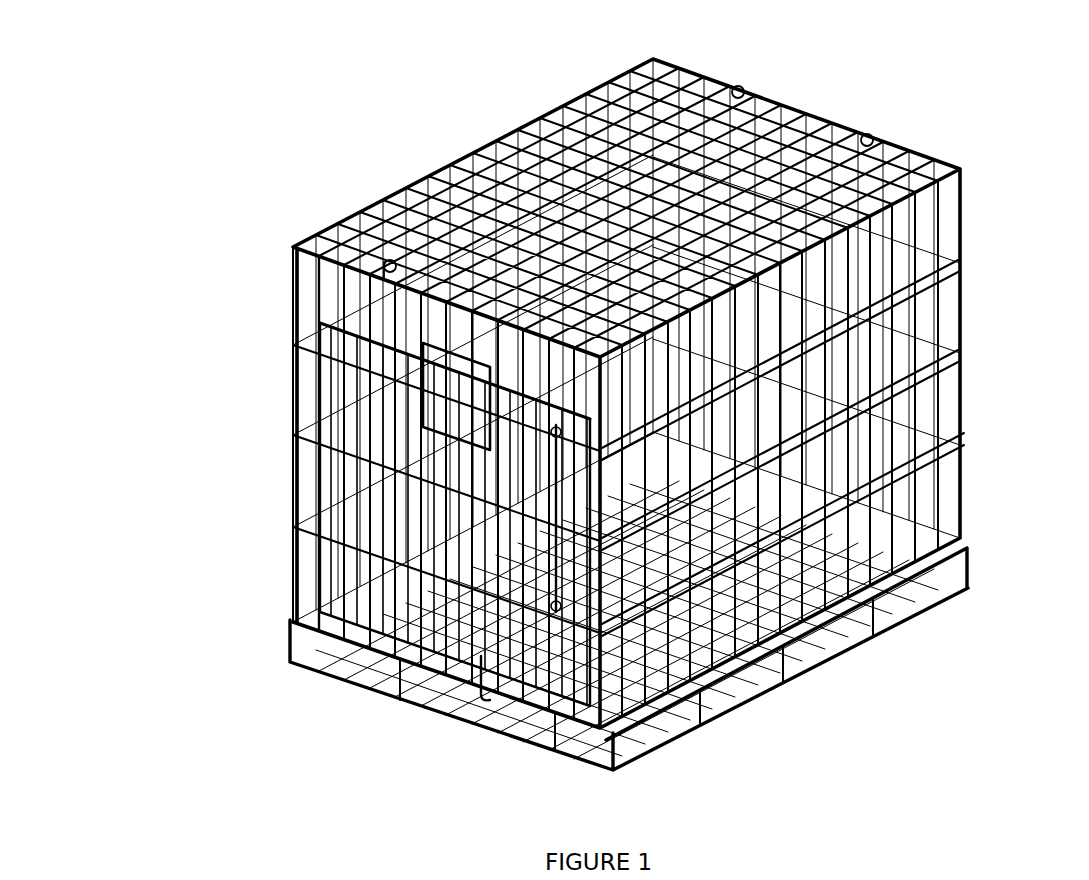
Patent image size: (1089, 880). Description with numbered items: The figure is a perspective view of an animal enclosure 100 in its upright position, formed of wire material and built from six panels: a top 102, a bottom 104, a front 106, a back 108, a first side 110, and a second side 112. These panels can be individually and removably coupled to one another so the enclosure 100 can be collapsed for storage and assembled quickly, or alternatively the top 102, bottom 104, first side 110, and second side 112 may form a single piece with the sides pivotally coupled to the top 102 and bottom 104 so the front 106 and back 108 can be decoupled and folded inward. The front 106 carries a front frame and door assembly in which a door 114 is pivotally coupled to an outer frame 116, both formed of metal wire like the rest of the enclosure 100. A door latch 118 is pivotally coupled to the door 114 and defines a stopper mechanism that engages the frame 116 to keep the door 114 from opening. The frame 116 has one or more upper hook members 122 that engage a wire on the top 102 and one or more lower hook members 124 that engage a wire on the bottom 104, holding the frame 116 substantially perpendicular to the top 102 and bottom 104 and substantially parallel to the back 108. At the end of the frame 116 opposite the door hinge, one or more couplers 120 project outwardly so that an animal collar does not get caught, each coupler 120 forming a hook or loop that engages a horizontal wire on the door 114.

The animal enclosure 100 is at (176, 198).
The top 102 is at (507, 157).
The bottom 104 is at (674, 725).
The front 106 is at (337, 540).
The back 108 is at (968, 282).
The first side 110 is at (920, 467).
The second side 112 is at (315, 410).
The door 114 is at (403, 460).
The outer frame 116 is at (350, 299).
The door latch 118 is at (445, 437).
The coupler 120 is at (557, 612).
The upper hook member 122 is at (380, 273).
The lower hook member 124 is at (480, 692).